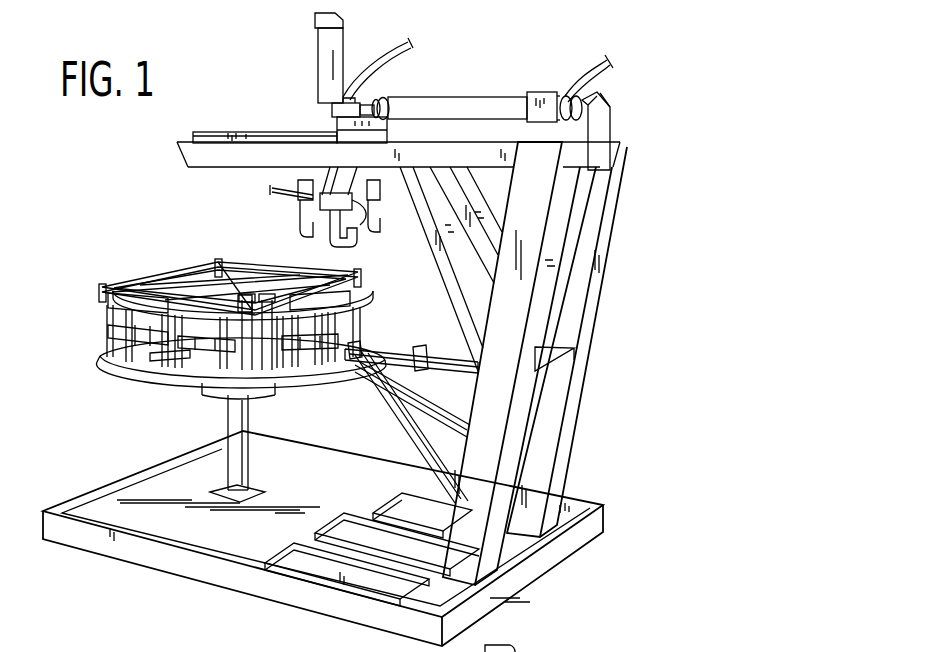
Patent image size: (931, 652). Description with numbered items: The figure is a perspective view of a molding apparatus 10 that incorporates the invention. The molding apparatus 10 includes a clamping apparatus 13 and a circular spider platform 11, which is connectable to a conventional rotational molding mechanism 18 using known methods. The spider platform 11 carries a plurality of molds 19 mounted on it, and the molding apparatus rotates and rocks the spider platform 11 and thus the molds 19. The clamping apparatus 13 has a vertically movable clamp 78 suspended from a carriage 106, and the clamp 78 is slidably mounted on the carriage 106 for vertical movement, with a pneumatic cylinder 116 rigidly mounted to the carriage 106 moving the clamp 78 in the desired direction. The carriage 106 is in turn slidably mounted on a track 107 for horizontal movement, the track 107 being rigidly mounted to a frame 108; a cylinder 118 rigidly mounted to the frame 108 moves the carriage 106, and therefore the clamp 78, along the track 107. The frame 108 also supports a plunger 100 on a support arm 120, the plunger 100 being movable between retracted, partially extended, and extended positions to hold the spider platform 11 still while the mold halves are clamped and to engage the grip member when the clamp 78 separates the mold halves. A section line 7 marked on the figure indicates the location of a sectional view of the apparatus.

The clamping apparatus 13 is at (552, 33).
The molding apparatus 10 is at (152, 254).
The circular spider platform 11 is at (116, 374).
The molds 19 is at (100, 333).
The rotational molding mechanism 18 is at (264, 418).
The clamp 78 is at (278, 207).
The plunger 100 is at (388, 348).
The support arm 120 is at (428, 385).
The carriage 106 is at (385, 127).
The track 107 is at (217, 133).
The frame 108 is at (617, 178).
The pneumatic cylinder 116 is at (333, 38).
The cylinder 118 is at (453, 98).
The section line 7- 7 is at (88, 304).